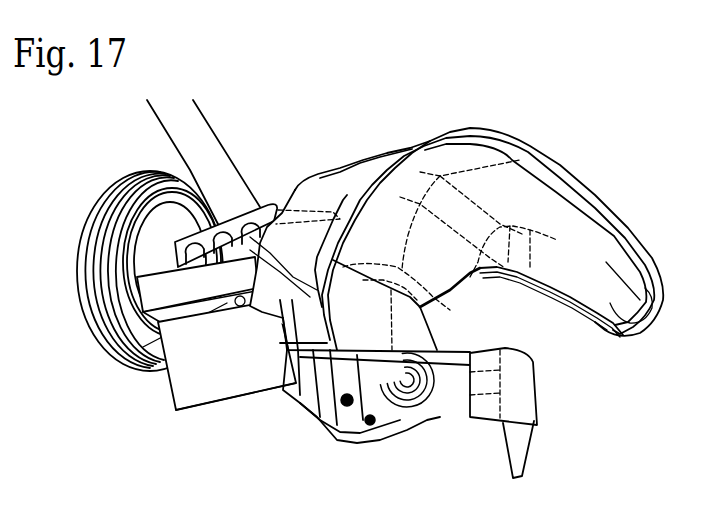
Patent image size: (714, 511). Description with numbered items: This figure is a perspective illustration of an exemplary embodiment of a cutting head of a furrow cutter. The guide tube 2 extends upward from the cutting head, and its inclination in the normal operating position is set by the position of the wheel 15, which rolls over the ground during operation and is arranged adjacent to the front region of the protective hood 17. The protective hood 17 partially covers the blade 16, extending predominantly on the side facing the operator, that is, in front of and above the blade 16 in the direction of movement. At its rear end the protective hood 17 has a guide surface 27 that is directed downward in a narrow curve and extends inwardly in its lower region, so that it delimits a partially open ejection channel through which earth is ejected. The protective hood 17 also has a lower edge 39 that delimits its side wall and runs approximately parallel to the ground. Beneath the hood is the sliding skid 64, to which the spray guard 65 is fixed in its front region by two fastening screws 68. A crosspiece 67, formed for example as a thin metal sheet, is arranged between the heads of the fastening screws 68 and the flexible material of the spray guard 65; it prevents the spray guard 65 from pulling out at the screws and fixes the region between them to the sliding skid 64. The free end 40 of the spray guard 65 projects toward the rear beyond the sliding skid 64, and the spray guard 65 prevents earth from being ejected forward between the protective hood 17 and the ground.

The guide tube 2 is at (206, 149).
The wheel 15 is at (112, 177).
The blade 16 is at (528, 392).
The protective hood 17 is at (345, 183).
The guide surface 27 is at (607, 302).
The lower edge 39 is at (281, 396).
The free end 40 is at (227, 401).
The sliding skid 64 is at (300, 402).
The spray guard 65 is at (193, 385).
The crosspiece 67 is at (137, 285).
The fastening screws 68 is at (122, 351).